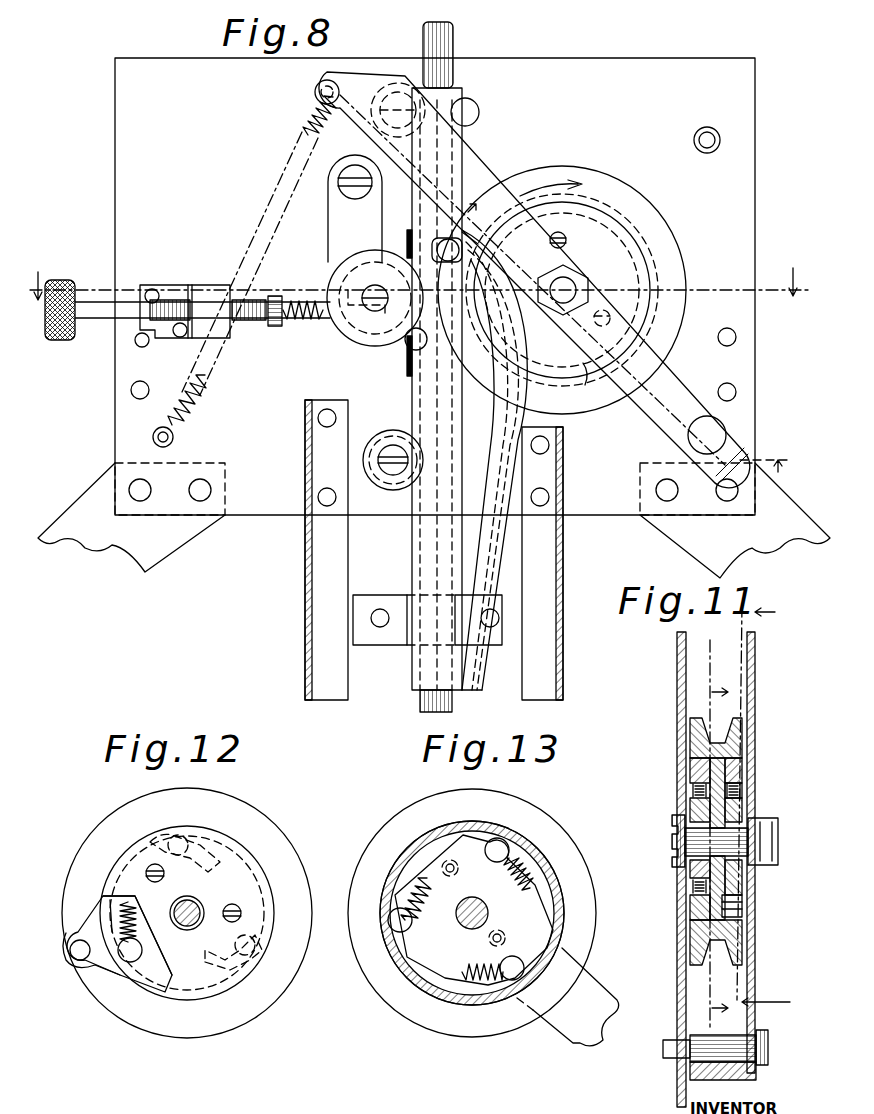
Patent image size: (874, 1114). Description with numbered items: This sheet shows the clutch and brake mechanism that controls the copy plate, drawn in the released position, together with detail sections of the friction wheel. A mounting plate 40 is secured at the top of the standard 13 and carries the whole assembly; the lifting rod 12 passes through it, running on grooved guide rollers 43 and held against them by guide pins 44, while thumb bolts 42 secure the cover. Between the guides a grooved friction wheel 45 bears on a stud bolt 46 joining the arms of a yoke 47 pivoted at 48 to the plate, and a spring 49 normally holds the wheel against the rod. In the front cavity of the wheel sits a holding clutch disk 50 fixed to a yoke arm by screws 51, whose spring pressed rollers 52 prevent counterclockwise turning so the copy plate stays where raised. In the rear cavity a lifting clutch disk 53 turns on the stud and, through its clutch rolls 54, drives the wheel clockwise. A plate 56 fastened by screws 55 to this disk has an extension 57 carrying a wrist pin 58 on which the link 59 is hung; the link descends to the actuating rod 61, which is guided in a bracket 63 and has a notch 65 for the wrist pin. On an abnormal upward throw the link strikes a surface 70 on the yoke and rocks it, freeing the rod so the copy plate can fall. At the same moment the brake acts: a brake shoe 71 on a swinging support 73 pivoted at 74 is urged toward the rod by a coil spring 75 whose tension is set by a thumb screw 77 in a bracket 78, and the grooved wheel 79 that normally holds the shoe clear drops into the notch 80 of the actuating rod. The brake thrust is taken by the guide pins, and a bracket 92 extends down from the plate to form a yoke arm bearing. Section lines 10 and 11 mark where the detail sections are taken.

In FIG. 8, the section line 10— 10 is at (423, 277).
In FIG. 8, the section line 11— 11 is at (637, 327).
In FIG. 8, the lifting rod 12 is at (455, 30).
In FIG. 11, the lifting rod 12 is at (774, 801).
In FIG. 8, the standard 13 is at (303, 560).
In FIG. 11, the standard 13 is at (712, 835).
In FIG. 8, the mounting plate 40 is at (435, 286).
In FIG. 11, the mounting plate 40 is at (677, 680).
In FIG. 8, the thumb bolts 42 is at (178, 432).
In FIG. 8, the grooved guide rollers 43 is at (398, 82).
In FIG. 8, the guide pins 44 is at (477, 108).
In FIG. 8, the friction wheel 45 is at (628, 190).
In FIG. 11, the friction wheel 45 is at (688, 900).
In FIG. 12, the friction wheel 45 is at (182, 1025).
In FIG. 13, the friction wheel 45 is at (566, 920).
In FIG. 8, the stud bolt 46 is at (572, 284).
In FIG. 11, the stud bolt 46 is at (688, 840).
In FIG. 12, the stud bolt 46 is at (200, 892).
In FIG. 13, the stud bolt 46 is at (490, 912).
In FIG. 8, the yoke 47 is at (482, 186).
In FIG. 11, the yoke 47 is at (757, 976).
In FIG. 8, the yoke pivot 48 is at (690, 445).
In FIG. 11, the yoke pivot 48 is at (768, 1046).
In FIG. 8, the spring 49 is at (300, 116).
In FIG. 11, the holding clutch disk 50 is at (688, 778).
In FIG. 13, the holding clutch disk 50 is at (537, 900).
In FIG. 11, the screws 51 is at (692, 792).
In FIG. 13, the screws 51 is at (458, 872).
In FIG. 13, the spring pressed rollers 52 is at (510, 840).
In FIG. 11, the lifting clutch disk 53 is at (742, 886).
In FIG. 12, the lifting clutch disk 53 is at (155, 952).
In FIG. 11, the clutch rolls 54 is at (742, 910).
In FIG. 12, the clutch rolls 54 is at (128, 962).
In FIG. 11, the screws 55 is at (742, 785).
In FIG. 12, the screws 55 is at (236, 906).
In FIG. 8, the plate 56 is at (586, 383).
In FIG. 11, the plate 56 is at (744, 810).
In FIG. 12, the plate 56 is at (238, 862).
In FIG. 12, the extension 57 is at (66, 962).
In FIG. 8, the wrist pin 58 is at (470, 258).
In FIG. 12, the wrist pin 58 is at (76, 946).
In FIG. 8, the link 59 is at (494, 460).
In FIG. 8, the actuating rod 61 is at (412, 538).
In FIG. 8, the bracket 63 is at (385, 646).
In FIG. 8, the notch 65 is at (446, 240).
In FIG. 8, the surface 70 is at (486, 249).
In FIG. 8, the brake shoe 71 is at (391, 318).
In FIG. 8, the swinging support 73 is at (333, 214).
In FIG. 8, the pivot 74 is at (345, 183).
In FIG. 8, the coil spring 75 is at (312, 300).
In FIG. 8, the thumb screw 77 is at (270, 328).
In FIG. 8, the bracket 78 is at (222, 290).
In FIG. 8, the grooved wheel 79 is at (345, 335).
In FIG. 8, the notch 80 is at (408, 348).
In FIG. 8, the bracket 92 is at (172, 548).